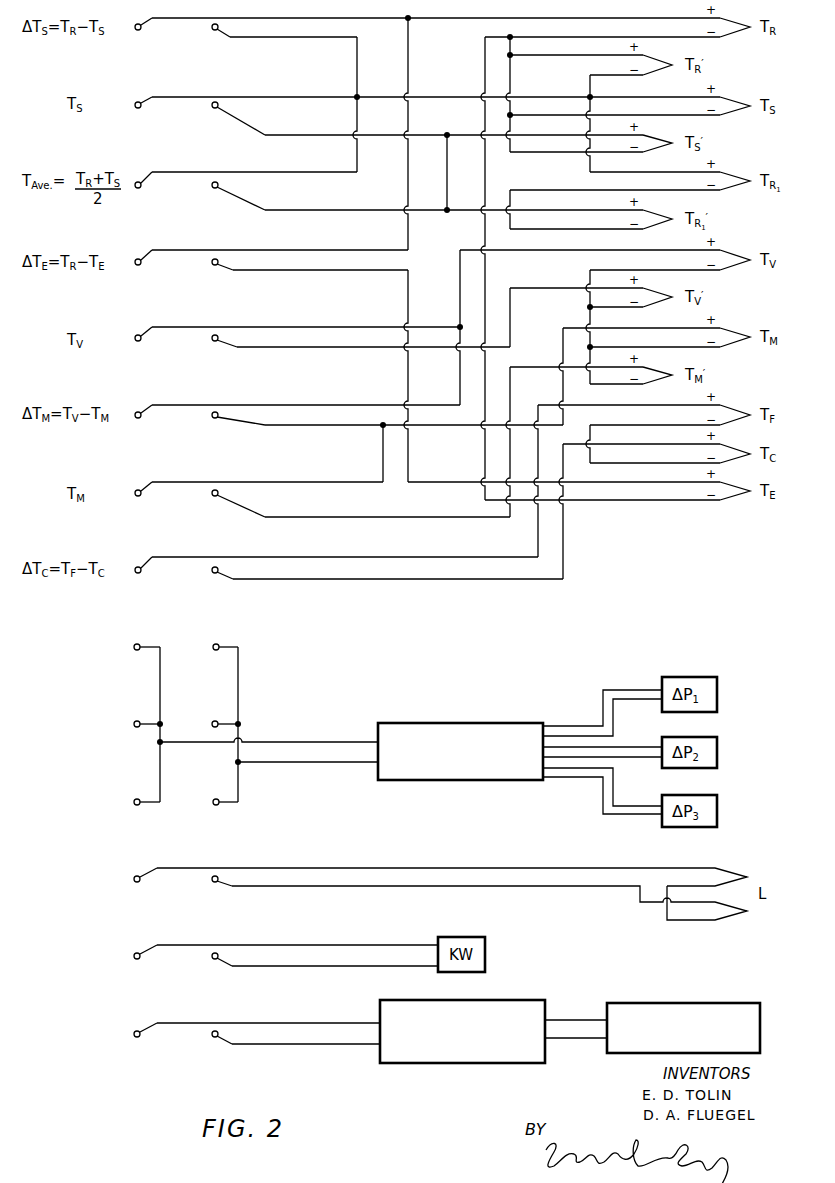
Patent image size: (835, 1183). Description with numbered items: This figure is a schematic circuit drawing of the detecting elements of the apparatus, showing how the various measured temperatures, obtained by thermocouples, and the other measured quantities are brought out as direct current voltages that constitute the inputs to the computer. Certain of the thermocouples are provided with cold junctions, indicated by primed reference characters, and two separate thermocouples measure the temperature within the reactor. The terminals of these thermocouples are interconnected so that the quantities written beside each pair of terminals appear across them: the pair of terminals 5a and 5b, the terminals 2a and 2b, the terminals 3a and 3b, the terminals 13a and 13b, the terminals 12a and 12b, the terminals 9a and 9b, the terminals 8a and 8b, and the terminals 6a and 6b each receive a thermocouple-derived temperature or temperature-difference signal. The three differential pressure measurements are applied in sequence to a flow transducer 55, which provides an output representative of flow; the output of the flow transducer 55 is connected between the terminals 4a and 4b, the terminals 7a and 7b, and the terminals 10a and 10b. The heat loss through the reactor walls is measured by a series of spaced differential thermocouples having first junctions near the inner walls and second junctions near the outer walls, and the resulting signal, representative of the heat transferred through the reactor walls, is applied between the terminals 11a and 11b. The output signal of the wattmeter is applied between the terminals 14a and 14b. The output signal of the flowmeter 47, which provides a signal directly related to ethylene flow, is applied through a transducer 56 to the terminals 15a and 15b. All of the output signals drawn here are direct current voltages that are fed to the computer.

The terminal 5a is at (137, 30).
The terminal 5b is at (214, 30).
The terminal 2a is at (137, 108).
The terminal 2b is at (214, 108).
The terminal 3a is at (137, 188).
The terminal 3b is at (214, 188).
The terminal 13a is at (137, 265).
The terminal 13b is at (214, 265).
The terminal 12a is at (137, 341).
The terminal 12b is at (214, 341).
The terminal 9a is at (137, 418).
The terminal 9b is at (214, 418).
The terminal 8a is at (137, 496).
The terminal 8b is at (214, 496).
The terminal 6a is at (137, 573).
The terminal 6b is at (214, 573).
The terminal 4a is at (134, 648).
The terminal 4b is at (214, 650).
The terminal 7a is at (134, 725).
The terminal 7b is at (212, 724).
The terminal 10a is at (134, 803).
The terminal 10b is at (214, 805).
The terminal 11a is at (134, 880).
The terminal 11b is at (213, 882).
The terminal 14a is at (134, 957).
The terminal 14b is at (213, 959).
The terminal 15a is at (134, 1035).
The terminal 15b is at (213, 1037).
The flow transducer 55 is at (490, 723).
The transducer 56 is at (510, 1000).
The flowmeter 47 is at (701, 1003).